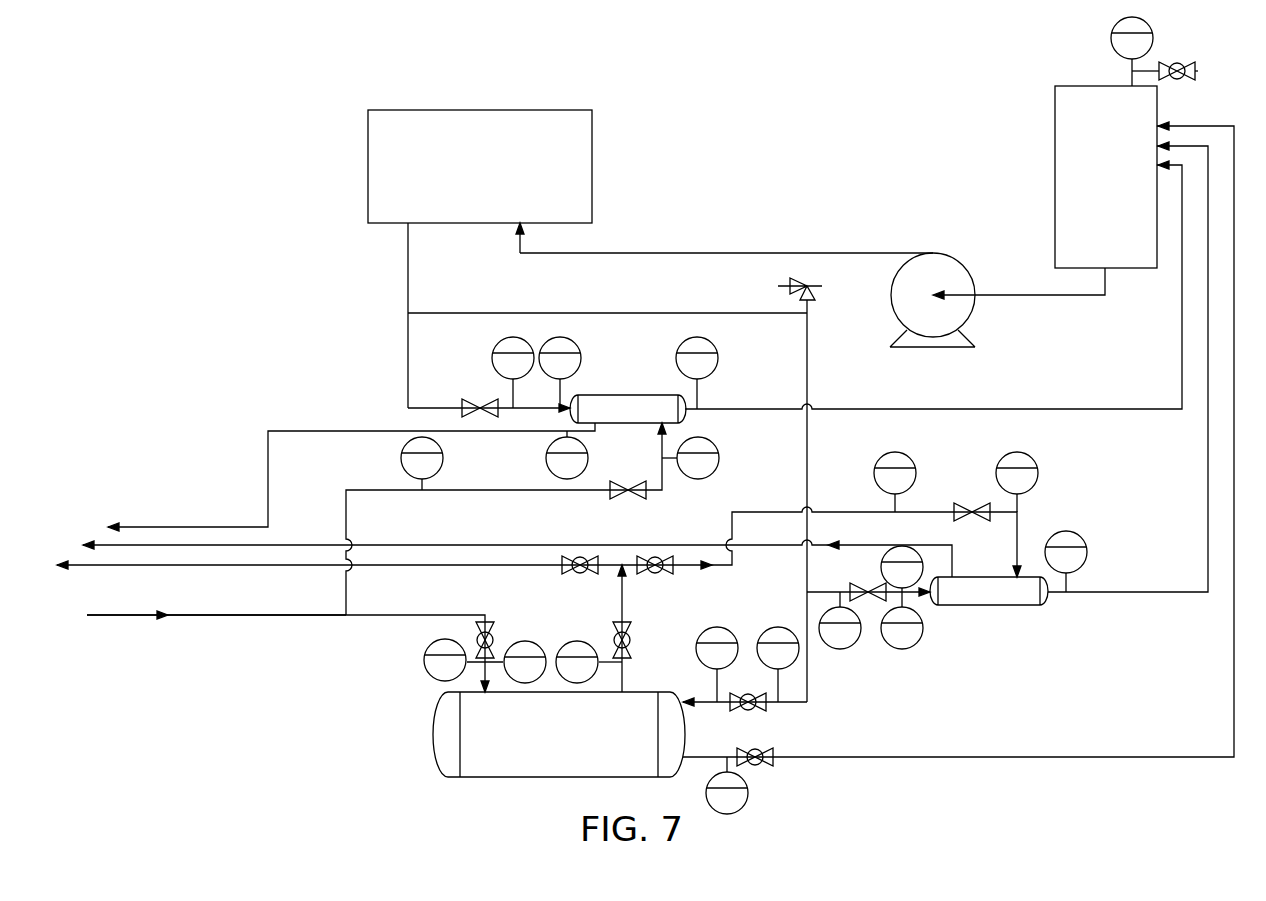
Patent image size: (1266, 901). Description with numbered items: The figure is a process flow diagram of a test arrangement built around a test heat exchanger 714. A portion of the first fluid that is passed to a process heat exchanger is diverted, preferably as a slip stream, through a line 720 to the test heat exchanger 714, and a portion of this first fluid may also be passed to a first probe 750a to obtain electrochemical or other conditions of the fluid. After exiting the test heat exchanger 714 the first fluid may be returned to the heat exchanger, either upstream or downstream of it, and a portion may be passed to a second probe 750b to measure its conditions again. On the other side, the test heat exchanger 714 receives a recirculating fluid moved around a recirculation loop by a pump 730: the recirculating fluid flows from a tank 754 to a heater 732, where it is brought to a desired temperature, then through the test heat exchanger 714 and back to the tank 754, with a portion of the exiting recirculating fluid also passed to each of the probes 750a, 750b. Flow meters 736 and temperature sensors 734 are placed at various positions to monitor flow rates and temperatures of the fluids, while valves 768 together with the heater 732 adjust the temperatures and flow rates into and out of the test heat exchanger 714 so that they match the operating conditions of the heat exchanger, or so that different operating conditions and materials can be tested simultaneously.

The test heat exchanger 714 is at (465, 778).
The line 720 is at (295, 618).
The pump 730 is at (975, 275).
The heater 732 is at (592, 152).
The temperature sensors 734 is at (922, 650).
The flow meters 736 is at (717, 352).
The first probe 750a is at (598, 395).
The second probe 750b is at (990, 606).
The tank 754 is at (1055, 127).
The valves 768 is at (500, 640).